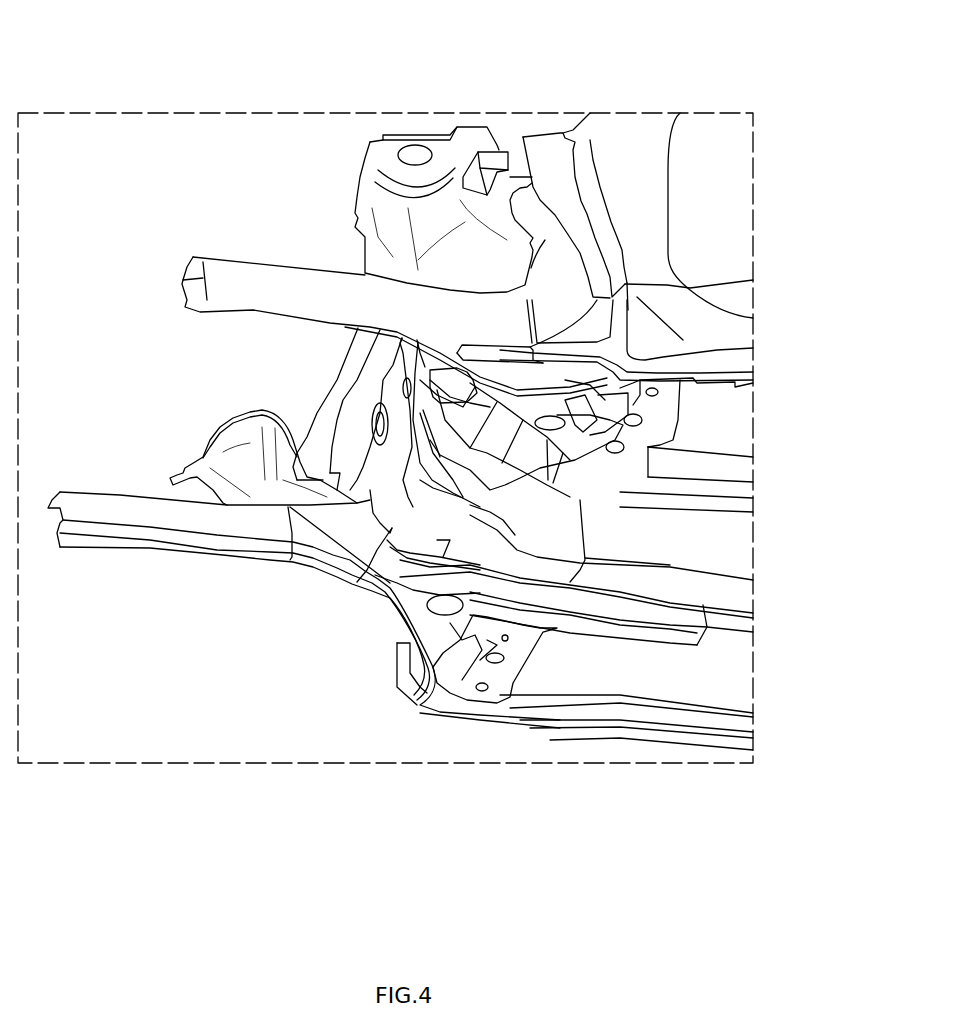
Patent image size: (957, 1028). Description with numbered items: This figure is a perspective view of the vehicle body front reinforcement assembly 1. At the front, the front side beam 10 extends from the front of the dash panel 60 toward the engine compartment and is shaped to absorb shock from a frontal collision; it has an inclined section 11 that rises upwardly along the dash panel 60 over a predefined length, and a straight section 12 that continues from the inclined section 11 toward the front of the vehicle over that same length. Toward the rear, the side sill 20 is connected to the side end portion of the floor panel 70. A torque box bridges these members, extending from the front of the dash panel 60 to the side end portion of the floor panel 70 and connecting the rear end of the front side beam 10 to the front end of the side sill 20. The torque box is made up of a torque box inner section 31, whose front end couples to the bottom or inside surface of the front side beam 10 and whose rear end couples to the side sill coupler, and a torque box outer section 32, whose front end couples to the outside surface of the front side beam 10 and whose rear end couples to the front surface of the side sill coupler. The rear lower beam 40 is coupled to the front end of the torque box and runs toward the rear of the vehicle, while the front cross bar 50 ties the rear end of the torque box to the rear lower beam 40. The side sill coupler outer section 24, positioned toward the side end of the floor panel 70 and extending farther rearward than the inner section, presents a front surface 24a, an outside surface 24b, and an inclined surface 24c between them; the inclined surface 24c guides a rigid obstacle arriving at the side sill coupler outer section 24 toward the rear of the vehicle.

The vehicle body front reinforcement assembly 1 is at (53, 31).
The front side beam 10 is at (246, 238).
The inclined section 11 is at (450, 325).
The straight section 12 is at (493, 328).
The side sill 20 is at (748, 273).
The side sill coupler outer section 24 is at (710, 287).
The front surface 24a is at (627, 340).
The outside surface 24b is at (717, 332).
The inclined surface 24c is at (645, 330).
The torque box inner section 31 is at (700, 381).
The torque box outer section 32 is at (555, 367).
The rear lower beam 40 is at (562, 443).
The front cross bar 50 is at (690, 443).
The dash panel 60 is at (380, 473).
The floor panel 70 is at (737, 420).